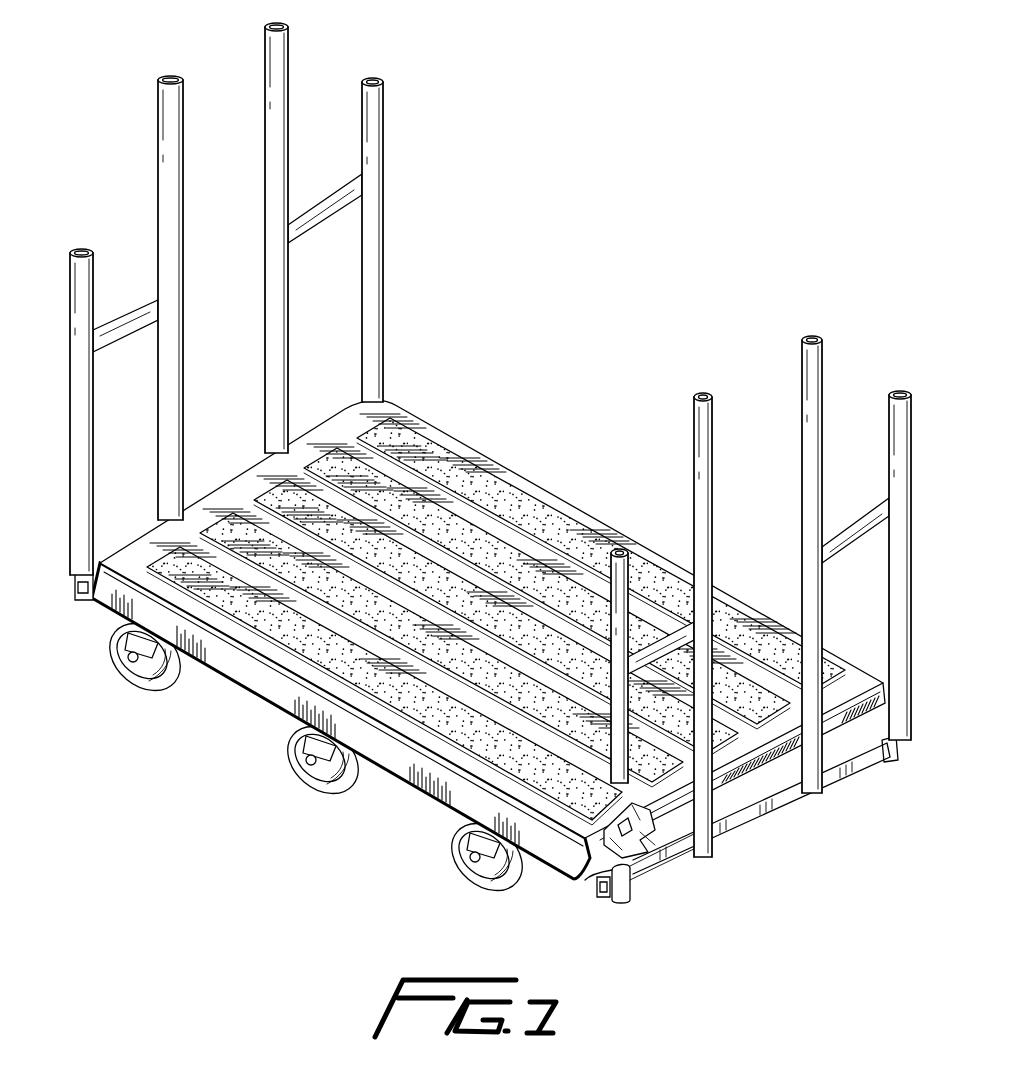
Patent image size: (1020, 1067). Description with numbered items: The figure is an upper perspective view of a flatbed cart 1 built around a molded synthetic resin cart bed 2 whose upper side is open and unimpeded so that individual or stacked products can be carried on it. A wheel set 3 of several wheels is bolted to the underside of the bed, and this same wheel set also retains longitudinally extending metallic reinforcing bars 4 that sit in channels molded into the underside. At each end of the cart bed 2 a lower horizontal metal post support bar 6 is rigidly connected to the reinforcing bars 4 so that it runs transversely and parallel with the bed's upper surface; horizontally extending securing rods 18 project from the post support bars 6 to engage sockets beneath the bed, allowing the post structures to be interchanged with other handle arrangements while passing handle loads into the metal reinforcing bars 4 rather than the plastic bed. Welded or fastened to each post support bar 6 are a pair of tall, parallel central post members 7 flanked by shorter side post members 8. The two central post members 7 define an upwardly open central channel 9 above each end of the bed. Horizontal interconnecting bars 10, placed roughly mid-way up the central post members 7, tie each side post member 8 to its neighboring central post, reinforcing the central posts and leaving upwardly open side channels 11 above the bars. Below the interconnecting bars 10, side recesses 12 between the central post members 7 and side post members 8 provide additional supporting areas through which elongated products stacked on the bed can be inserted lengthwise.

The flatbed cart 1 is at (486, 437).
The cart bed 2 is at (555, 500).
The wheel set 3 is at (157, 695).
The reinforcing bars 4 is at (650, 833).
The post support bars 6 is at (83, 603).
The central post members 7 is at (272, 220).
The side post members 8 is at (68, 265).
The open central channel 9 is at (222, 112).
The horizontal interconnecting bars 10 is at (137, 320).
The side channels 11 is at (120, 200).
The side recesses 12 is at (300, 395).
The securing rods 18 is at (566, 874).